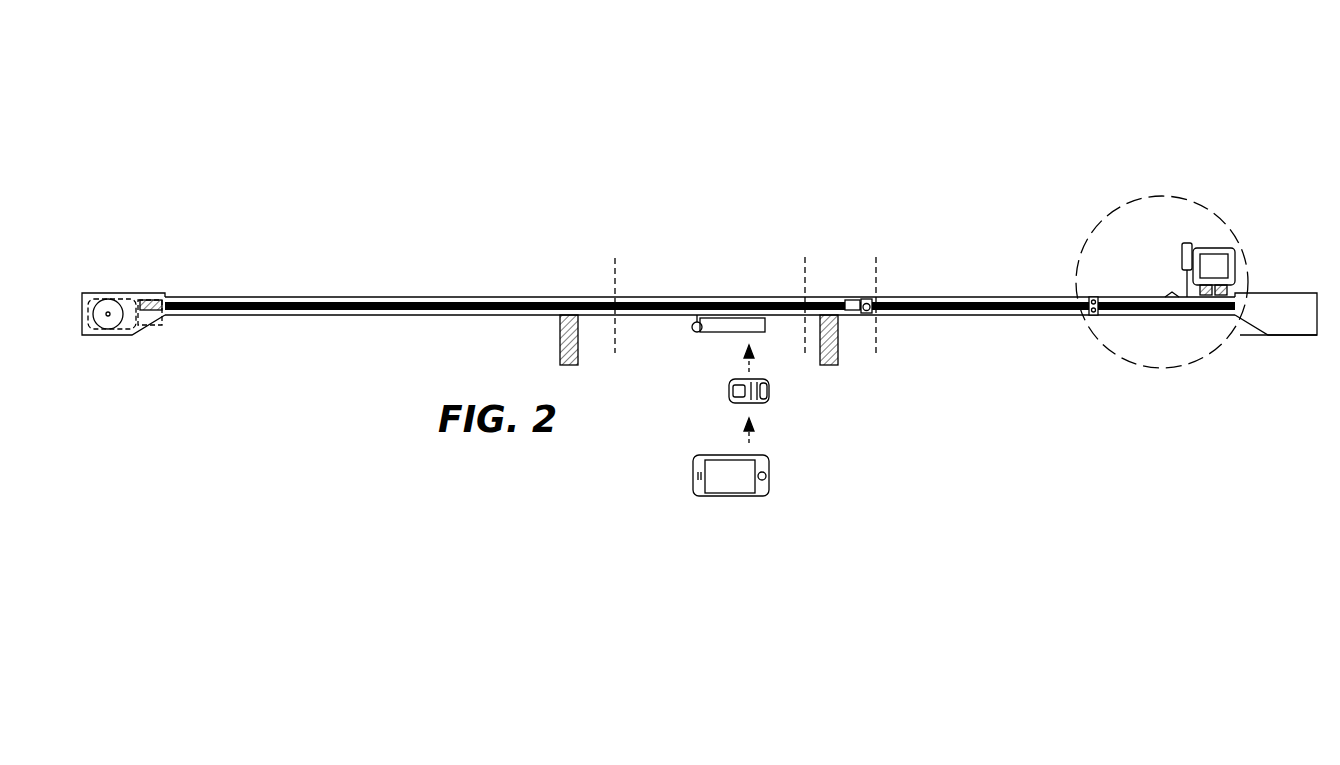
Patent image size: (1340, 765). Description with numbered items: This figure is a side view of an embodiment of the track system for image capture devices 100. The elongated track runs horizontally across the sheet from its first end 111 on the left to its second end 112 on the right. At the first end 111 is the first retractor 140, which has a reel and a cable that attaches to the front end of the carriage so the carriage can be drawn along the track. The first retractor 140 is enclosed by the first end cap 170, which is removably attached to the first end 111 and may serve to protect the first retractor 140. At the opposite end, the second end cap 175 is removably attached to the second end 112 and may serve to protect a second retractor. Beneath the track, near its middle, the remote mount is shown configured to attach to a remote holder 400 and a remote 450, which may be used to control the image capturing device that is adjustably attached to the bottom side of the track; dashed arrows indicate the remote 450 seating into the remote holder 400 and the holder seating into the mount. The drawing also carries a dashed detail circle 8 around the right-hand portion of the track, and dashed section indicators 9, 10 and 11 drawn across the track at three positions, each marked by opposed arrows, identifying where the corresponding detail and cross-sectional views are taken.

The track system for image capture devices 100 is at (438, 135).
The first end cap 170 is at (91, 298).
The first retractor 140 is at (115, 322).
The first end 111 is at (163, 298).
The second end 112 is at (1233, 303).
The second end cap 175 is at (1295, 326).
The detail view circle 8 is at (1164, 195).
The section line 9 is at (860, 307).
The section line 10 is at (791, 307).
The section line 11 is at (599, 308).
The remote holder 400 is at (768, 400).
The remote 450 is at (717, 482).